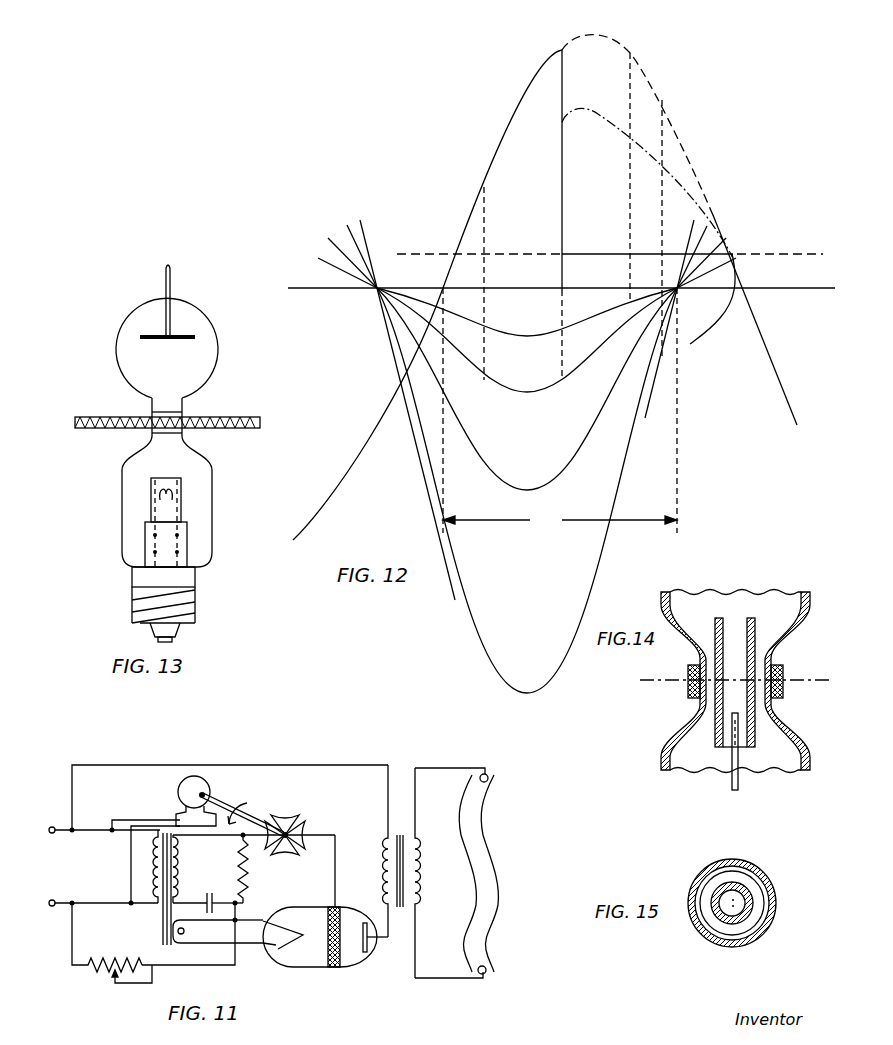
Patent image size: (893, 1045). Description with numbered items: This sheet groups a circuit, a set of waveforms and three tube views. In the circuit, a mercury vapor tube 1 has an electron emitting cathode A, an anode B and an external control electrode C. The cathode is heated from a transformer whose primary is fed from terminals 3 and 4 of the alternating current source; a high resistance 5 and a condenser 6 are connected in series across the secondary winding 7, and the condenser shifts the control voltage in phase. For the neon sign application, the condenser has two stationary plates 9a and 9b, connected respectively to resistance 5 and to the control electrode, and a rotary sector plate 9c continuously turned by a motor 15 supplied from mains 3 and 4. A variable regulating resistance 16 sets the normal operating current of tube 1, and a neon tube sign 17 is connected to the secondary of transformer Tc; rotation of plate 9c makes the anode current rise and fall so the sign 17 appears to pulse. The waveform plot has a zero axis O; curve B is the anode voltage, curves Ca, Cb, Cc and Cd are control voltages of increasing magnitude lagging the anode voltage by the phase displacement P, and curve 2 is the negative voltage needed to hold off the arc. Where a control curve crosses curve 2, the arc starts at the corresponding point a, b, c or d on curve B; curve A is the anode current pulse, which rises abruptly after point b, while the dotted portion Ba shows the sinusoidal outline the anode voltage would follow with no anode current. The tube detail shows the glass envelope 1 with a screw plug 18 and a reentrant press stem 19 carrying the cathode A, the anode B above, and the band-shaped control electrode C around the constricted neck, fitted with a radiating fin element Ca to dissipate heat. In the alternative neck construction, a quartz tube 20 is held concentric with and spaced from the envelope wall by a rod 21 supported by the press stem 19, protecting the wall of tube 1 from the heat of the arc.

In FIG. 12, the mercury vapor tube 1 is at (421, 254).
In FIG. 13, the mercury vapor tube 1 is at (219, 340).
In FIG. 14, the mercury vapor tube 1 is at (746, 593).
In FIG. 15, the mercury vapor tube 1 is at (770, 908).
In FIG. 12, the negative control voltage curve 2 is at (700, 338).
In FIG. 11, the power source terminal 3 is at (216, 799).
In FIG. 11, the power source terminal 4 is at (101, 915).
In FIG. 11, the high resistance 5 is at (240, 857).
In FIG. 11, the condenser 6 is at (210, 899).
In FIG. 11, the secondary winding 7 is at (185, 856).
In FIG. 11, the stationary condenser plate 9a is at (276, 853).
In FIG. 11, the stationary condenser plate 9b is at (317, 830).
In FIG. 11, the rotary sector plate 9c is at (299, 812).
In FIG. 14, the motor 15 is at (725, 681).
In FIG. 11, the motor 15 is at (210, 789).
In FIG. 11, the variable regulating resistance 16 is at (109, 966).
In FIG. 11, the neon tube sign 17 is at (494, 852).
In FIG. 13, the screw plug 18 is at (196, 601).
In FIG. 13, the reentrant press stem 19 is at (188, 529).
In FIG. 14, the refractory tube 20 is at (755, 625).
In FIG. 15, the refractory tube 20 is at (712, 893).
In FIG. 14, the rod 21 is at (741, 765).
In FIG. 12, the cathode A is at (575, 111).
In FIG. 13, the cathode A is at (182, 486).
In FIG. 12, the anode B is at (530, 93).
In FIG. 13, the anode B is at (182, 334).
In FIG. 12, the dotted anode voltage portion Ba is at (678, 130).
In FIG. 13, the control electrode C is at (186, 412).
In FIG. 14, the control electrode C is at (783, 670).
In FIG. 15, the control electrode C is at (768, 884).
In FIG. 12, the radiating fin element Ca is at (513, 336).
In FIG. 13, the radiating fin element Ca is at (261, 421).
In FIG. 12, the control voltage curve Cb is at (506, 393).
In FIG. 12, the control voltage curve Cc is at (575, 465).
In FIG. 12, the control voltage curve Cd is at (457, 606).
In FIG. 11, the transformer Tc is at (401, 836).
In FIG. 12, the zero axis O is at (561, 278).
In FIG. 12, the phase displacement P is at (560, 410).
In FIG. 12, the arc starting point a is at (486, 191).
In FIG. 12, the arc starting point b is at (560, 51).
In FIG. 12, the arc starting point c is at (637, 170).
In FIG. 12, the arc starting point d is at (671, 225).